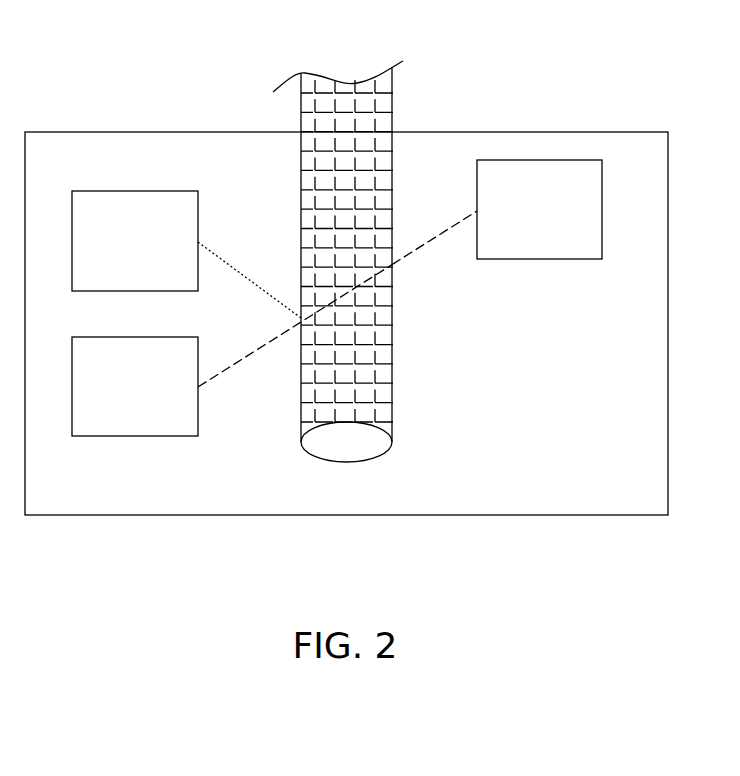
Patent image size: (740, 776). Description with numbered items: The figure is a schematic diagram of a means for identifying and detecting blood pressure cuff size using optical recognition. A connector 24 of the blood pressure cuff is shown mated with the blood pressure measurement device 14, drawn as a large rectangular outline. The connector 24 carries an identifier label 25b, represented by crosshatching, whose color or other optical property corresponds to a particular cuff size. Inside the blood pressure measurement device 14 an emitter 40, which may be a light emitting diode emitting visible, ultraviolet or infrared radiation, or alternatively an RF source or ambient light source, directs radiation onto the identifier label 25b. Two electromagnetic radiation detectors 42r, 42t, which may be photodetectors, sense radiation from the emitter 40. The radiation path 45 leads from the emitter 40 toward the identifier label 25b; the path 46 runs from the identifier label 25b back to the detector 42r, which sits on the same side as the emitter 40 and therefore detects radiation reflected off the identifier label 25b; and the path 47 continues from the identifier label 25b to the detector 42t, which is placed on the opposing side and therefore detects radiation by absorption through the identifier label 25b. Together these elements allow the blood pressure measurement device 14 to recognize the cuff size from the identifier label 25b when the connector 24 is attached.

The blood pressure measurement device 14 is at (114, 132).
The connector 24 is at (393, 85).
The identifier label 25b is at (382, 183).
The emitter 40 is at (117, 396).
The detector 42r is at (149, 250).
The detector 42t is at (555, 218).
The signal path from controller 45 is at (240, 362).
The signal path to receiver 46 is at (250, 281).
The signal path from transmitter 47 is at (428, 242).